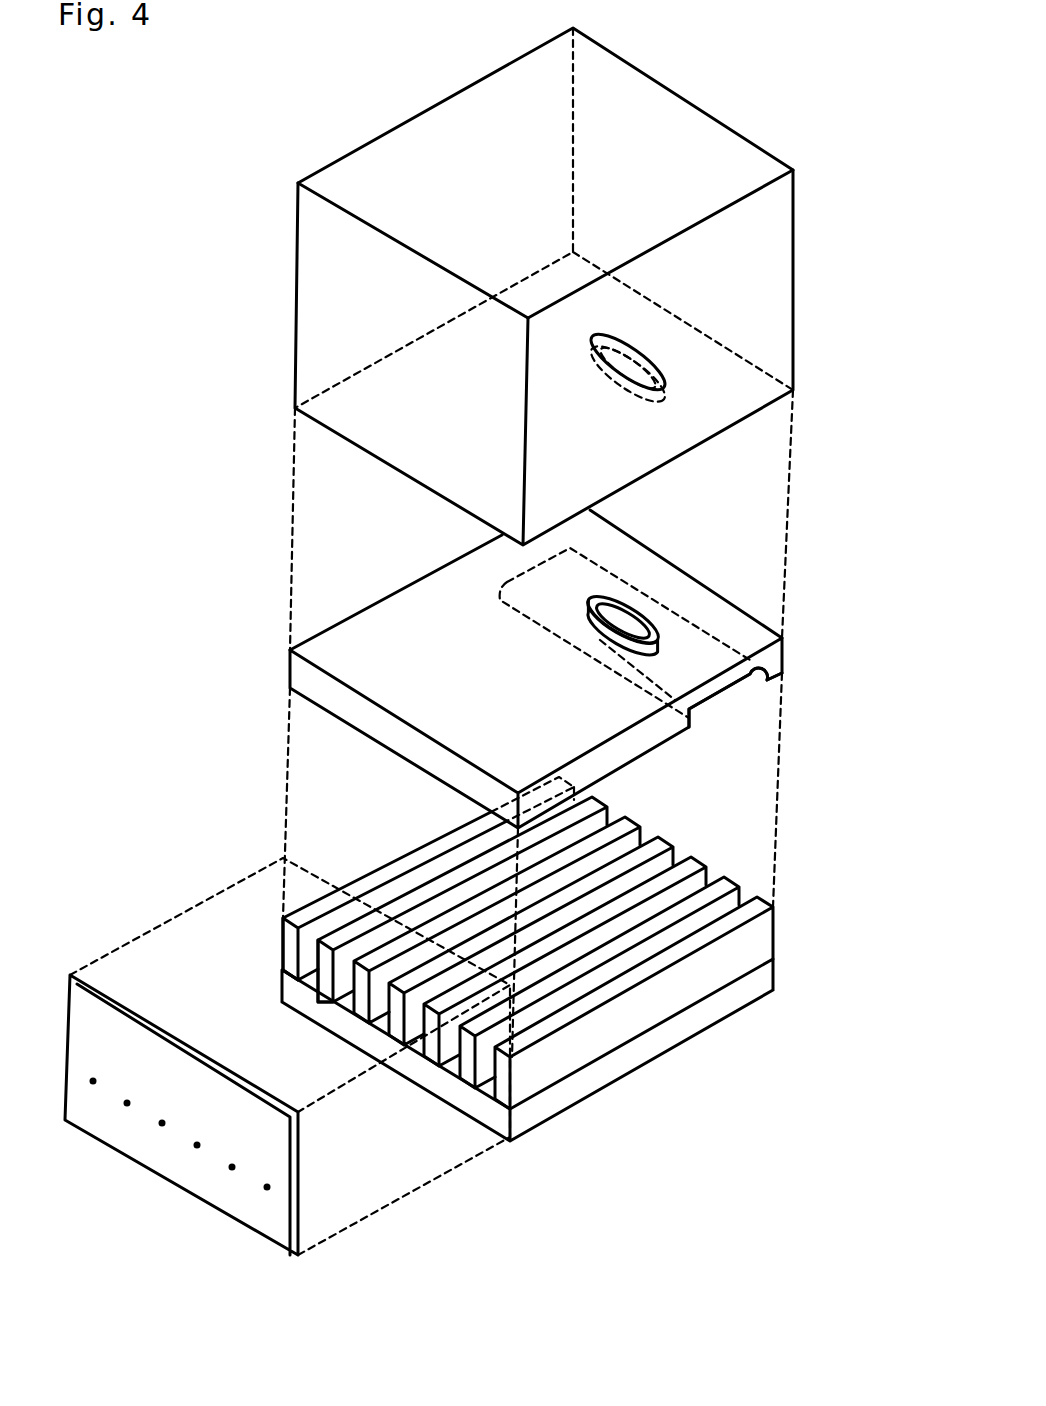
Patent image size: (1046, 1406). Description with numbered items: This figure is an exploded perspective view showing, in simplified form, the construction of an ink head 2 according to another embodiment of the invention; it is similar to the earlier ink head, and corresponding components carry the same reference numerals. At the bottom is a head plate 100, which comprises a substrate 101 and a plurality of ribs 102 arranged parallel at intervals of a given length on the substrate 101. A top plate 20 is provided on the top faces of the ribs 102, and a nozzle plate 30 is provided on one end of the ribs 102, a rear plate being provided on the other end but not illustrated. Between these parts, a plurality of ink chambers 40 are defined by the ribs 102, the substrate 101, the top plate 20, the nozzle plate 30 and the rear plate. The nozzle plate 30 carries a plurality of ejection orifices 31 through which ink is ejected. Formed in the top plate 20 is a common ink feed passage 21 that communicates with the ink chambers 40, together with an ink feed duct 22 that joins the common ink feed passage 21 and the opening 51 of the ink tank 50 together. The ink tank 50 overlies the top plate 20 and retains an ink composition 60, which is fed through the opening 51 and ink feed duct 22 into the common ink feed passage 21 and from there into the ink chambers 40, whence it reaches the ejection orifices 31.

The ink head 2 is at (344, 76).
The top plate 20 is at (357, 667).
The common ink feed passage 21 is at (725, 698).
The ink feed duct 22 is at (613, 633).
The nozzle plate 30 is at (273, 1233).
The ejection orifices 31 is at (267, 1188).
The ink chambers 40 is at (483, 1072).
The ink tank 50 is at (776, 291).
The opening 51 is at (673, 397).
The ink composition 60 is at (684, 150).
The head plate 100 is at (643, 1075).
The substrate 101 is at (370, 1038).
The ribs 102 is at (336, 1000).